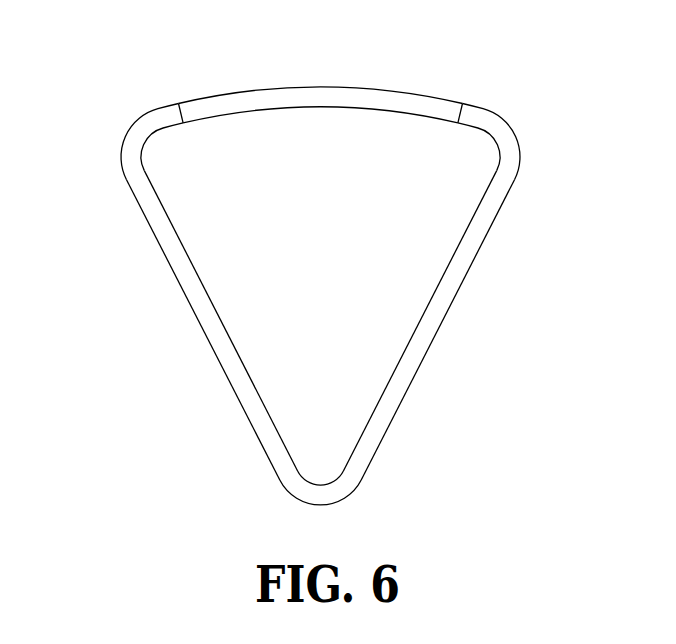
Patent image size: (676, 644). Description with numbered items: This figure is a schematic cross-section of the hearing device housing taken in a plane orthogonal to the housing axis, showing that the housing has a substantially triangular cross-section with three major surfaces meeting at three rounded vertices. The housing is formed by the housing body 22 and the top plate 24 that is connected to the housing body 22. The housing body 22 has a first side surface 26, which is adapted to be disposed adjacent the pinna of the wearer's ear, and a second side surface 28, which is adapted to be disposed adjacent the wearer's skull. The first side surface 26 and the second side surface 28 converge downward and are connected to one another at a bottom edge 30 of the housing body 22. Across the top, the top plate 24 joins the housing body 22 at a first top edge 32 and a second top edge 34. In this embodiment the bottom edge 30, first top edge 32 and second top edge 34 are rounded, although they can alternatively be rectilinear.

The housing body 22 is at (170, 371).
The top plate 24 is at (320, 87).
The first side surface 26 is at (416, 372).
The second side surface 28 is at (250, 422).
The bottom edge 30 is at (334, 503).
The first top edge 32 is at (515, 135).
The second top edge 34 is at (124, 140).